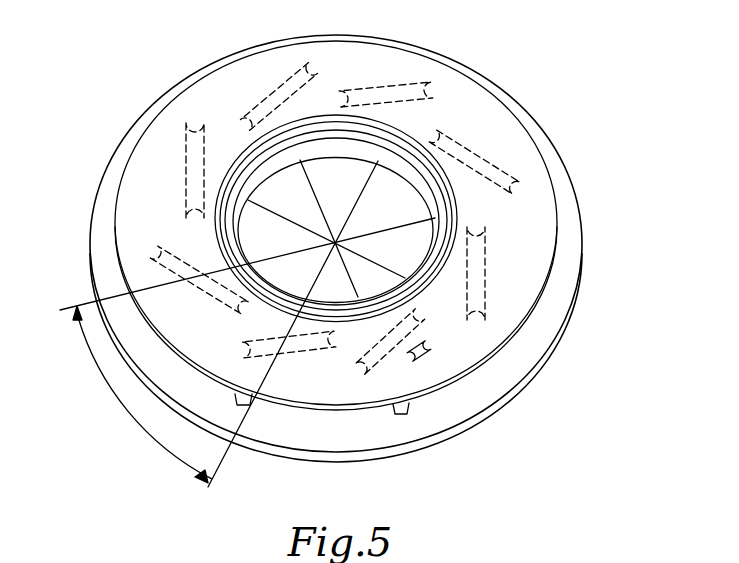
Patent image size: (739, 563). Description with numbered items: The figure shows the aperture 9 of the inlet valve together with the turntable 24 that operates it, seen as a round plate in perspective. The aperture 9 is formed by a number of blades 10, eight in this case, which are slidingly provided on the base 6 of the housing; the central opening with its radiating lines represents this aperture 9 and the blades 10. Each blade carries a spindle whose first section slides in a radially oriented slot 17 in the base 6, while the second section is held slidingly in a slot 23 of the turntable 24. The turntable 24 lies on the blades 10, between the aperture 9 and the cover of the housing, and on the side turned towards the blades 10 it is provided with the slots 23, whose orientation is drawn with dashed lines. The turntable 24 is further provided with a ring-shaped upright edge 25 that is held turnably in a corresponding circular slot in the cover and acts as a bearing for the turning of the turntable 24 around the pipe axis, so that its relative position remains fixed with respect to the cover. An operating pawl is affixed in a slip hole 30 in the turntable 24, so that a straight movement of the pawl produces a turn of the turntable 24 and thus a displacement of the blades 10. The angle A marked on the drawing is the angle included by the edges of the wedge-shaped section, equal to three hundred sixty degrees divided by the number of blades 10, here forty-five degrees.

The base 6 is at (103, 275).
The aperture 9 is at (237, 183).
The blades 10 is at (382, 203).
The radially oriented slot 17 is at (238, 397).
The slot 23 is at (390, 92).
The turntable 24 is at (493, 127).
The ring-shaped upright edge 25 is at (217, 213).
The slip hole 30 is at (422, 354).
The angle A is at (142, 394).